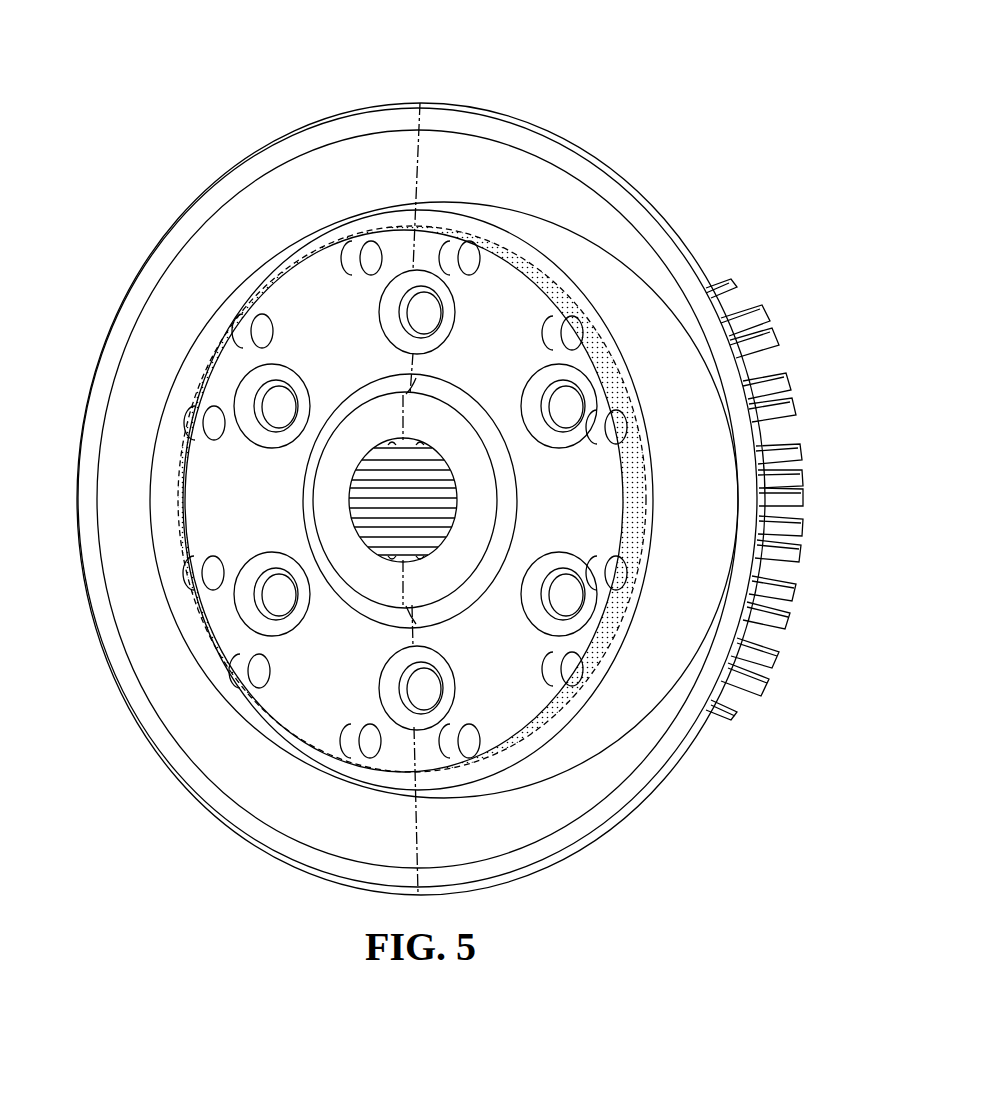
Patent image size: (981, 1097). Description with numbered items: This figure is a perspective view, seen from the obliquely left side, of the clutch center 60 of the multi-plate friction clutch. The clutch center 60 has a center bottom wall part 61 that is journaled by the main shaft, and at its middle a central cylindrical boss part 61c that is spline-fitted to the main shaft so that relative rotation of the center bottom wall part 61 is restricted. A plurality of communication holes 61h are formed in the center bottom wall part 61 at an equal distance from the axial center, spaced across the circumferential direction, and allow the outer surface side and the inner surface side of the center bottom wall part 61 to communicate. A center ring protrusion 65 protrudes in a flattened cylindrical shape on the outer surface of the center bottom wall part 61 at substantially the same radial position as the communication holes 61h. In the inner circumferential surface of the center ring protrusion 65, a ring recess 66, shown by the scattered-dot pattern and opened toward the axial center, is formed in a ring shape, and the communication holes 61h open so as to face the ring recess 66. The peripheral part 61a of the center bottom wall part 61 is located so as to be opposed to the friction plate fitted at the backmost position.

The clutch center 60 is at (287, 101).
The center bottom wall part 61 is at (210, 486).
The peripheral part 61a is at (396, 158).
The central cylindrical boss part 61c is at (330, 512).
The communication holes 61h is at (254, 328).
The center ring protrusion 65 is at (185, 605).
The ring recess 66 is at (521, 285).